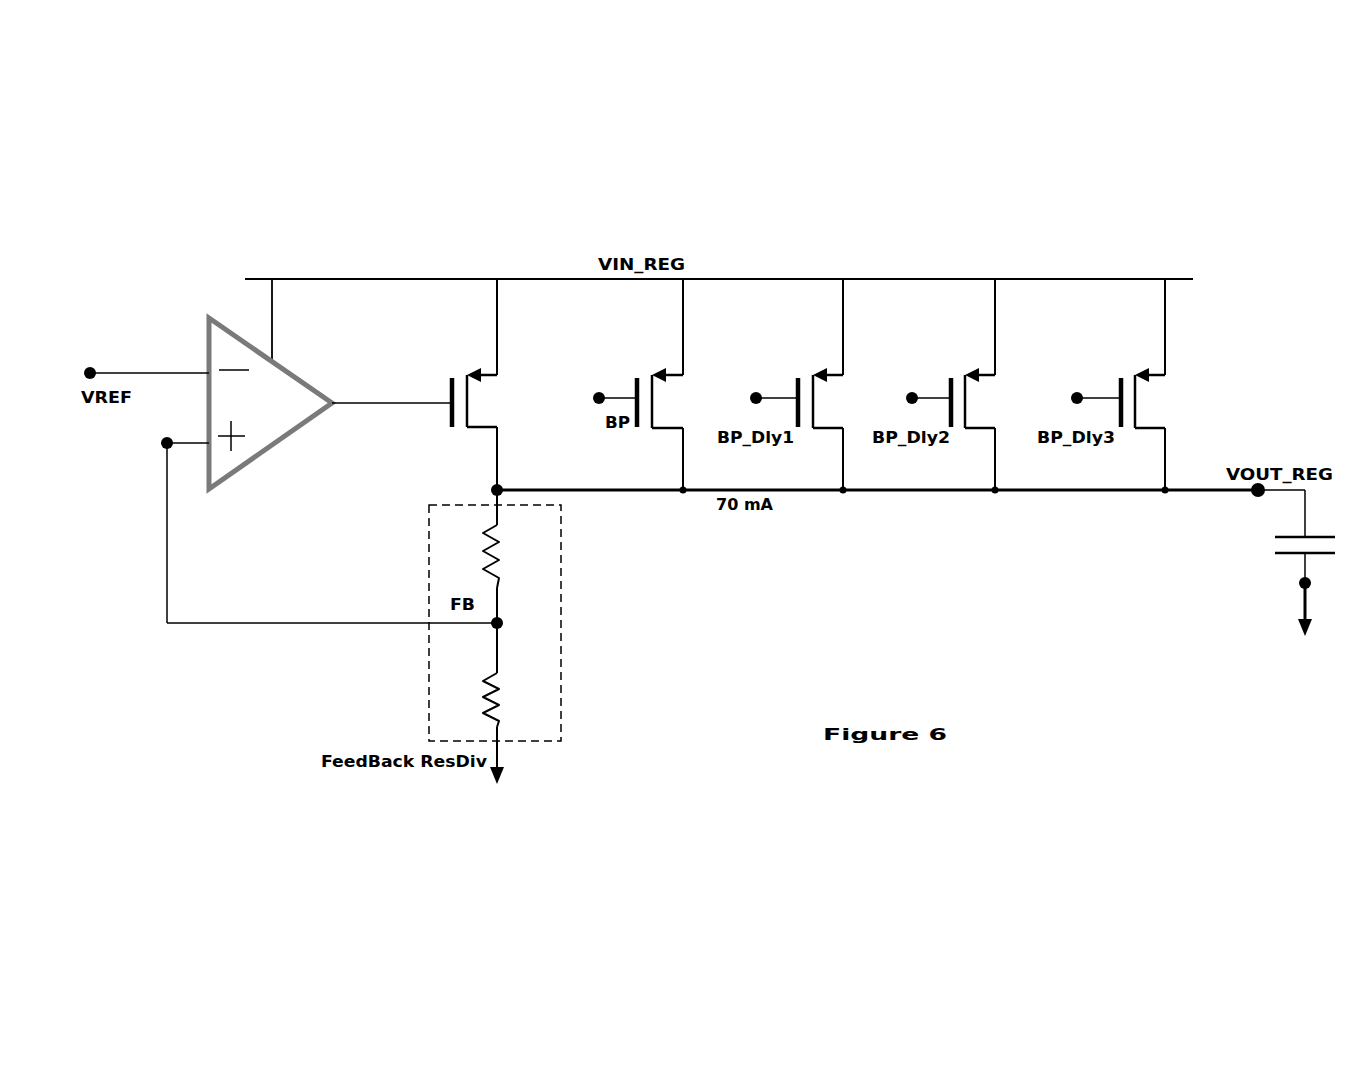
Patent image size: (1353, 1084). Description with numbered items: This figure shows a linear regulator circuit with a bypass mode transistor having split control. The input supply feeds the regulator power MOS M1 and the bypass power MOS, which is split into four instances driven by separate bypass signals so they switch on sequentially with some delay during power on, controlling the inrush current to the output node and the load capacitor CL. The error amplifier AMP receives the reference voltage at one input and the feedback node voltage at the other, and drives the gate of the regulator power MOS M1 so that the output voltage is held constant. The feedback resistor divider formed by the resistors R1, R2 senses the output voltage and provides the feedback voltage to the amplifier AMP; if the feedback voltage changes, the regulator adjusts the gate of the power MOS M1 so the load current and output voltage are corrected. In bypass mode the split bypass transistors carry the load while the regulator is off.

The error amplifier AMP is at (270, 403).
The regulator power MOS M1 is at (483, 384).
The feedback resistor R1 is at (514, 539).
The feedback resistor R2 is at (514, 728).
The load capacitor CL is at (1300, 563).